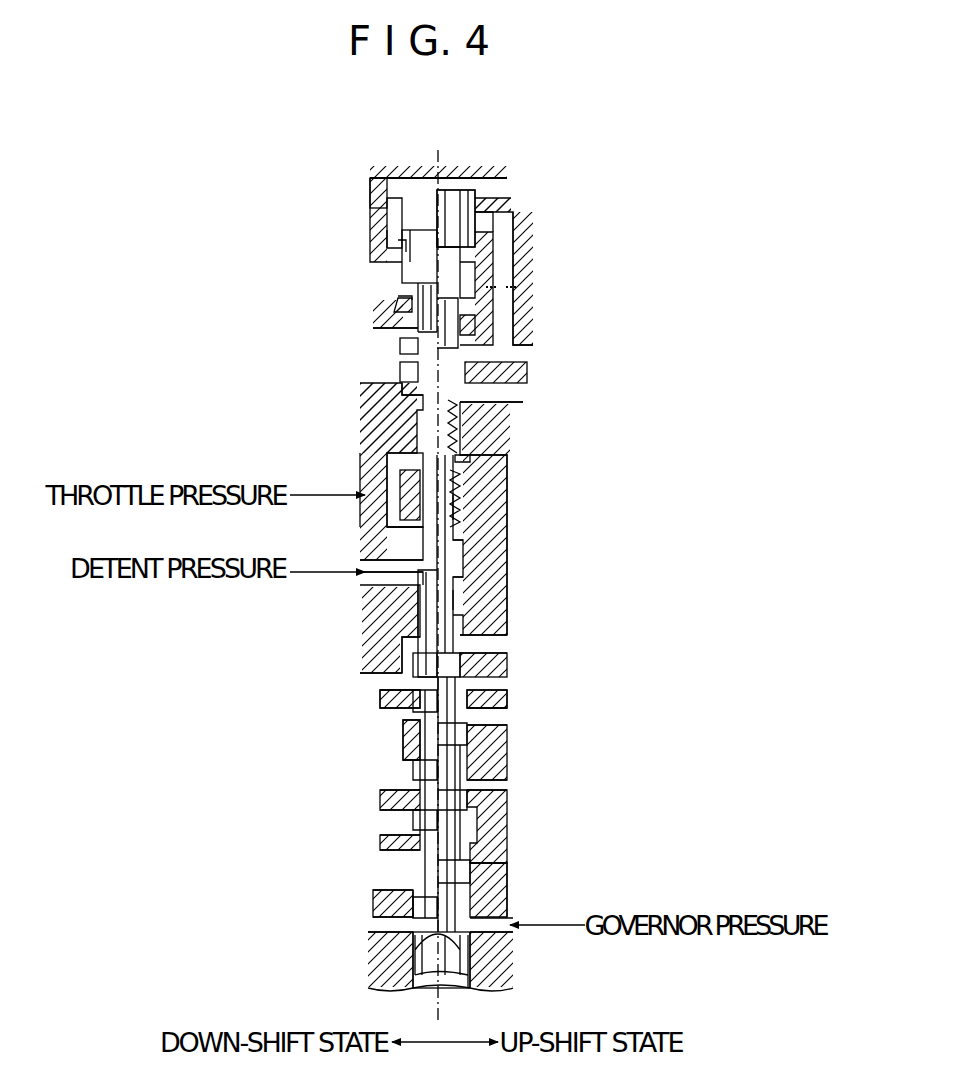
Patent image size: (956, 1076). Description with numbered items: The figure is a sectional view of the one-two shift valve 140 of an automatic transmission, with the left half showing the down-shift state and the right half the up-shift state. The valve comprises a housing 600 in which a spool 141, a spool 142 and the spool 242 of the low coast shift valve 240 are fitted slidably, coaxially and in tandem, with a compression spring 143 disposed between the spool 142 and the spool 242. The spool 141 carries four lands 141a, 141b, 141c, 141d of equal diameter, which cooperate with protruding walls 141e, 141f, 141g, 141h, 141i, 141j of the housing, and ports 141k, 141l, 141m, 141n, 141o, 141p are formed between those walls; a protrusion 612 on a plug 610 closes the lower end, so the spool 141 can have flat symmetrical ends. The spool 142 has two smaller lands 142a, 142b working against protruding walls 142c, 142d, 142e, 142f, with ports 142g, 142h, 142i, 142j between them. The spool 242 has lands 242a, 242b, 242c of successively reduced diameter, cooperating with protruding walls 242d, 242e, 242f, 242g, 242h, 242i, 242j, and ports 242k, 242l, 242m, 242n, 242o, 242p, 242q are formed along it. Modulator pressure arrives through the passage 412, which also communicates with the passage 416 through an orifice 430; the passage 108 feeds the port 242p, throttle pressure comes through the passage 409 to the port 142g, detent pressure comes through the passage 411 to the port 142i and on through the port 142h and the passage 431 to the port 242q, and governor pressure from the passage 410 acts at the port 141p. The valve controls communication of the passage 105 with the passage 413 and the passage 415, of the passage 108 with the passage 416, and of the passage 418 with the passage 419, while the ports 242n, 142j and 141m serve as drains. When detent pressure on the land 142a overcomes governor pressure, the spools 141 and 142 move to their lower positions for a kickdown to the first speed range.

The low coast shift valve 240 is at (453, 176).
The passage 412 is at (498, 190).
The spool of low coast shift valve 242 is at (408, 263).
The port 242k is at (393, 188).
The protruding wall 242d is at (392, 201).
The protruding wall 242e is at (388, 241).
The port 242m is at (404, 248).
The protruding wall 242f is at (404, 300).
The protruding wall 242g is at (396, 313).
The port 242n is at (416, 327).
The protruding wall 242h is at (408, 349).
The protruding wall 242i is at (416, 378).
The protruding wall 242j is at (416, 398).
The port 242q is at (404, 432).
The passage 409 is at (362, 490).
The passage 431 is at (394, 471).
The port 142g is at (396, 520).
The port 142h is at (406, 532).
The passage 411 is at (368, 562).
The spool 142 is at (463, 531).
The port 142i is at (416, 590).
The port 142j is at (406, 630).
The protruding wall 141e is at (412, 656).
The passage 413 is at (396, 683).
The protruding wall 141f is at (410, 700).
The protruding wall 141g is at (404, 735).
The protruding wall 141h is at (410, 766).
The passage 419 is at (398, 790).
The port 141n is at (408, 820).
The protruding wall 141i is at (408, 841).
The passage 418 is at (396, 867).
The port 141o is at (408, 885).
The protruding wall 141j is at (406, 906).
The port 141p is at (402, 931).
The housing 600 is at (406, 958).
The 1-2 shift valve 140 is at (487, 949).
The protrusion 612 is at (432, 986).
The plug 610 is at (472, 986).
The passage 410 is at (500, 915).
The land 141d is at (480, 870).
The spool 141 is at (467, 838).
The land 141c is at (472, 808).
The port 141m is at (477, 785).
The land 141b is at (476, 750).
The port 141l is at (475, 716).
The passage 105 is at (520, 720).
The port 141k is at (478, 698).
The passage 415 is at (482, 669).
The land 141a is at (482, 645).
The land 142b is at (462, 626).
The protruding wall 142f is at (462, 600).
The protruding wall 142e is at (457, 575).
The protruding wall 142d is at (457, 553).
The land 142a is at (457, 505).
The protruding wall 142c is at (460, 489).
The compression spring 143 is at (467, 458).
The land 242c is at (459, 425).
The port 242p is at (490, 410).
The passage 108 is at (530, 390).
The port 242o is at (505, 372).
The passage 416 is at (525, 342).
The land 242b is at (470, 326).
The orifice 430 is at (505, 286).
The port 242l is at (482, 226).
The land 242a is at (459, 211).